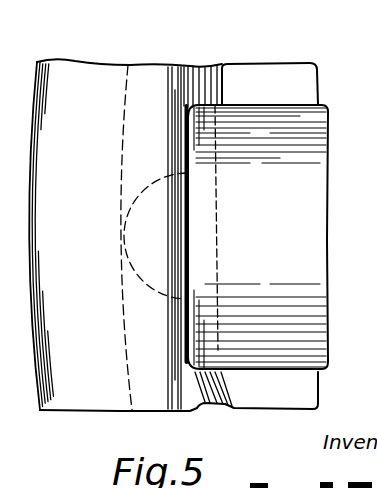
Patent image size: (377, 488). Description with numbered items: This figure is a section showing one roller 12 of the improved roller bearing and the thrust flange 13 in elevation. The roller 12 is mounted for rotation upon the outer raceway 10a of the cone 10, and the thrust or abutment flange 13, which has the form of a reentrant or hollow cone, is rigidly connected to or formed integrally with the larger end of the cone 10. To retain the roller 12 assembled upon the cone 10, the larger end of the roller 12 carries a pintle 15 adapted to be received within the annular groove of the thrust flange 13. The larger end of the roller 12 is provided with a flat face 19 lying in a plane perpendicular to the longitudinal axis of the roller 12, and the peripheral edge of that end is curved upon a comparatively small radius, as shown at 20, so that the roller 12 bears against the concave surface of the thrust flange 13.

The cone 10 is at (292, 47).
The outer raceway 10a is at (316, 383).
The roller 12 is at (258, 237).
The thrust flange 13 is at (171, 235).
The pintle 15 is at (146, 186).
The flat face 19 is at (185, 221).
The curved peripheral edge 20 is at (197, 106).